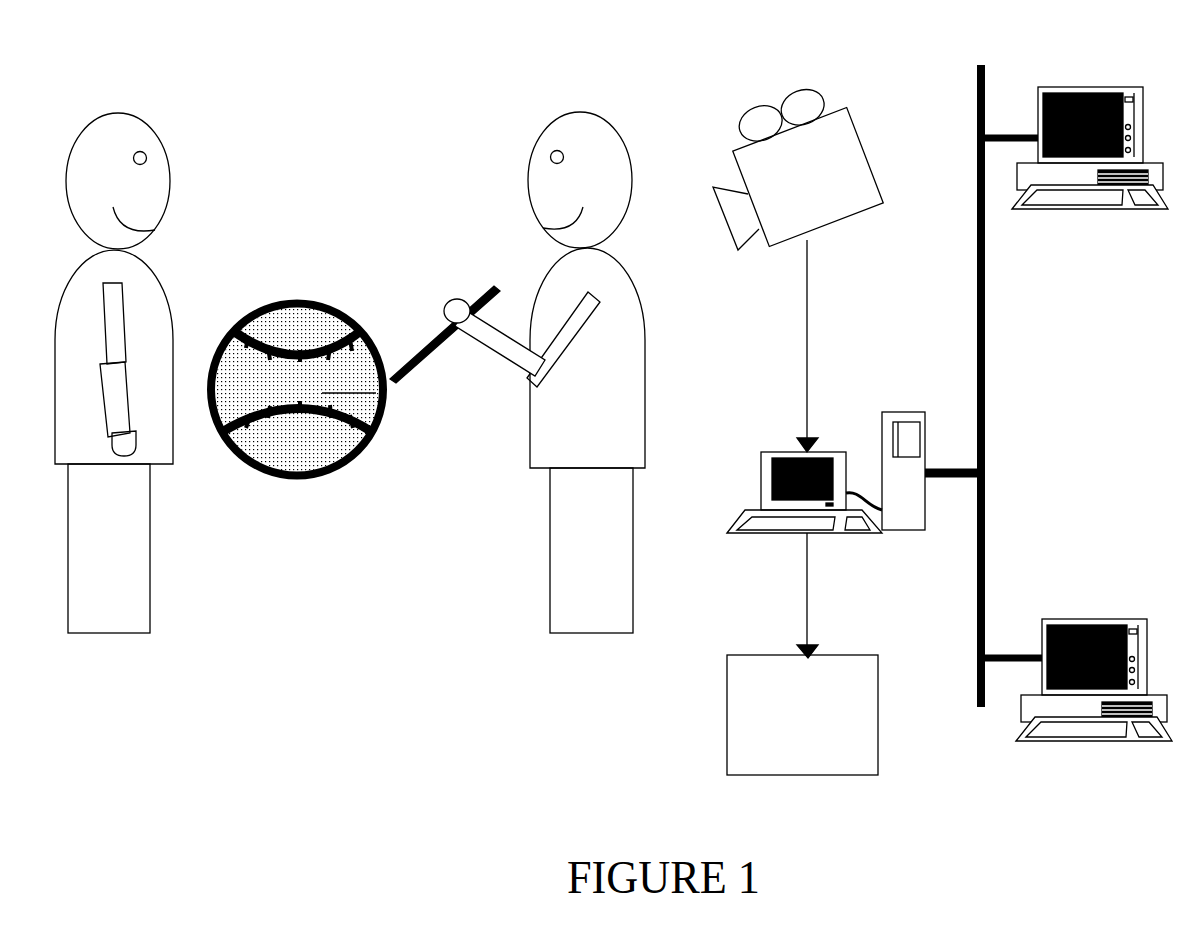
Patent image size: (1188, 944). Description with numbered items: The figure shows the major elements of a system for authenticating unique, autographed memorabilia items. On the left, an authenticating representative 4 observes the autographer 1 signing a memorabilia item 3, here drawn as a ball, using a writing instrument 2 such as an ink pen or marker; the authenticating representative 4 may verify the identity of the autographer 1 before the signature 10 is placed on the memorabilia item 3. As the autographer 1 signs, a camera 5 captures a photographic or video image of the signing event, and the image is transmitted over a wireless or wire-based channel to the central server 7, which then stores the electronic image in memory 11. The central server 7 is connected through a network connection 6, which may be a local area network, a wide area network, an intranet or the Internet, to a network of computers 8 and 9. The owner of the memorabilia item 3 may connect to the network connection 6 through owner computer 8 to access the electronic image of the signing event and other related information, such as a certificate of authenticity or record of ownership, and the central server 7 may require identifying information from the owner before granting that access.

The autographer 1 is at (543, 135).
The writing instrument 2 is at (423, 340).
The memorabilia item 3 is at (318, 478).
The authenticating representative 4 is at (147, 125).
The camera 5 is at (735, 152).
The network connection 6 is at (980, 88).
The central server 7 is at (898, 410).
The owner computer 8 is at (1103, 208).
The computer 9 is at (1085, 620).
The signature 10 is at (367, 470).
The memory 11 is at (727, 713).